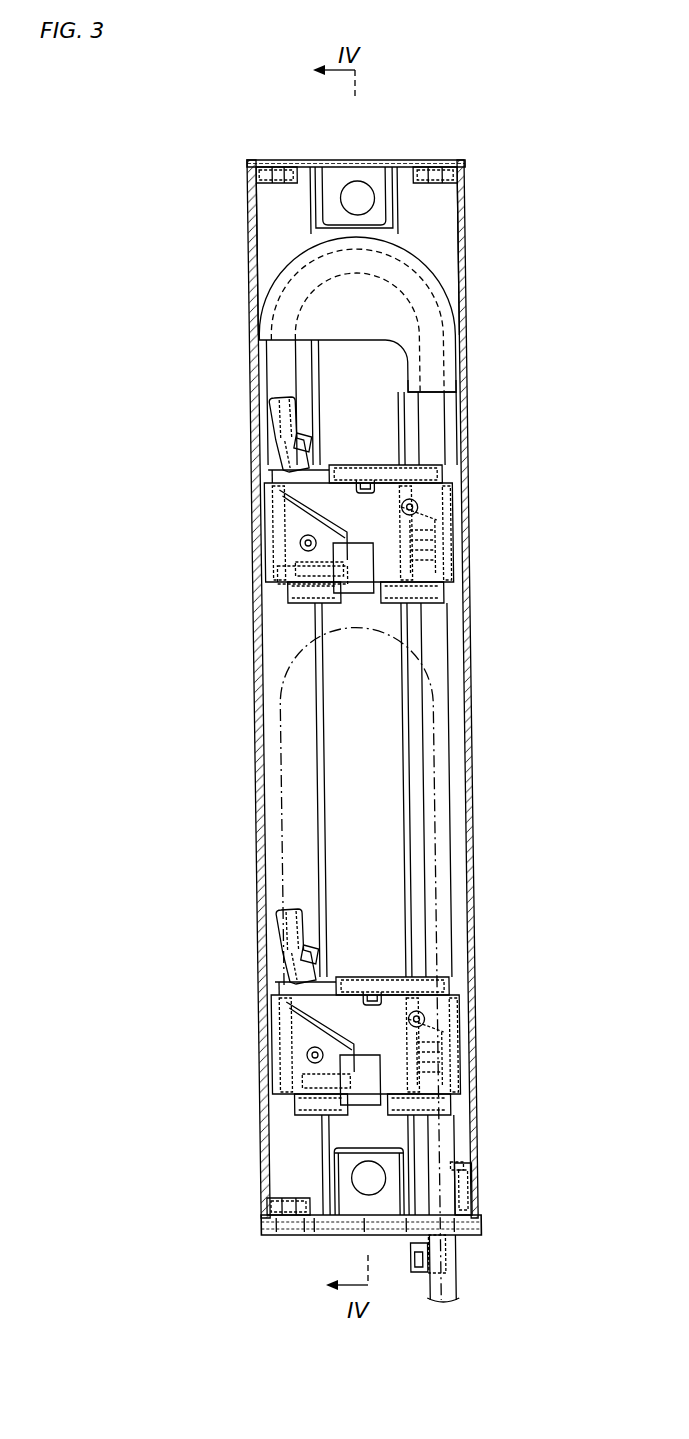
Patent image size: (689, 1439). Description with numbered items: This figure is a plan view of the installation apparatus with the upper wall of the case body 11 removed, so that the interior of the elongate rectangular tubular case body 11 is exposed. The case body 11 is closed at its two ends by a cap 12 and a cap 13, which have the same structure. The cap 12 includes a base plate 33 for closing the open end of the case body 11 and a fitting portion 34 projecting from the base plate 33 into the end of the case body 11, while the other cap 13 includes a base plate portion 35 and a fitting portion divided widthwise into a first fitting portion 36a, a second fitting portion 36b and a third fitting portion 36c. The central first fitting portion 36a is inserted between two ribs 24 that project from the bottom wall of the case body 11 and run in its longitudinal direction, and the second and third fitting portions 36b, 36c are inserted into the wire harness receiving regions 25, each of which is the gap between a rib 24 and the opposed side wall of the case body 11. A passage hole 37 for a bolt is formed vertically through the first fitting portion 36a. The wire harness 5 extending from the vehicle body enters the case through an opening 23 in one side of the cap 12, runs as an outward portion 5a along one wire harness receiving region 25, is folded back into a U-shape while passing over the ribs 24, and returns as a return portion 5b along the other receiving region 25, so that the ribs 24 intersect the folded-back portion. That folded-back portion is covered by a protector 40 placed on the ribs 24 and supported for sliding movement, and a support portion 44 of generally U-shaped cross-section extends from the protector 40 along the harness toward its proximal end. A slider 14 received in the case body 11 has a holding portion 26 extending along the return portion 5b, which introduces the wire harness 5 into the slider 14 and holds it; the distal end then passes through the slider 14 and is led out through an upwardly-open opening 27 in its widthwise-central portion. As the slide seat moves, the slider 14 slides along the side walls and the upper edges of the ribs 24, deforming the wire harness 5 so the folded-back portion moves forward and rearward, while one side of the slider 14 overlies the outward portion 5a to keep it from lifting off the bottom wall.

The wire harness 5 is at (467, 1283).
The outward portion 5a is at (435, 423).
The return portion 5b is at (270, 350).
The case body 11 is at (480, 311).
The cap 12 is at (248, 1226).
The cap 13 is at (238, 161).
The slider 14 is at (463, 520).
The opening 23 is at (465, 1232).
The rib 24 is at (308, 198).
The wire harness receiving region 25 is at (270, 242).
The holding portion 26 is at (268, 428).
The opening 27 is at (290, 572).
The base plate 33 is at (310, 1236).
The fitting portion 34 is at (323, 1178).
The base plate portion 35 is at (283, 161).
The first fitting portion 36a is at (388, 190).
The second fitting portion 36b is at (467, 168).
The third fitting portion 36c is at (262, 176).
The passage hole 37 is at (357, 200).
The protector 40 is at (457, 284).
The support portion 44 is at (450, 378).